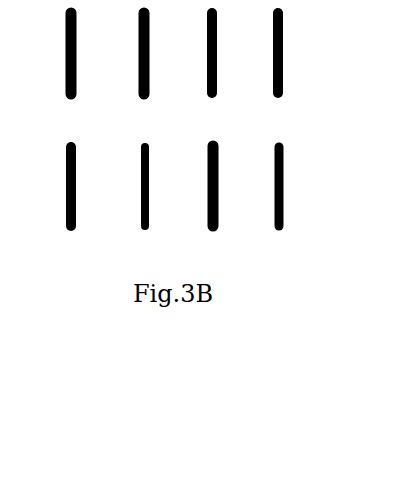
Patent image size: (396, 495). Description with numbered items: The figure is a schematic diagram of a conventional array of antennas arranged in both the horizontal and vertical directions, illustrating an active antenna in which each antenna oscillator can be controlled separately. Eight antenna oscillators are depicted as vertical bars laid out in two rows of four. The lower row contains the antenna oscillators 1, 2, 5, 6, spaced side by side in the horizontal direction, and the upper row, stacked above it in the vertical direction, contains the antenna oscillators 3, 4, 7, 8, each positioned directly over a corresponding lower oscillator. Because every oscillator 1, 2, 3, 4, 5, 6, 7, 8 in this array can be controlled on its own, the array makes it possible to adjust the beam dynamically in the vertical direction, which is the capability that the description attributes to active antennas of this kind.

The antenna oscillator 1 is at (71, 201).
The antenna oscillator 2 is at (144, 201).
The antenna oscillator 3 is at (70, 68).
The antenna oscillator 4 is at (144, 68).
The antenna oscillator 5 is at (212, 201).
The antenna oscillator 6 is at (278, 201).
The antenna oscillator 7 is at (212, 68).
The antenna oscillator 8 is at (277, 68).